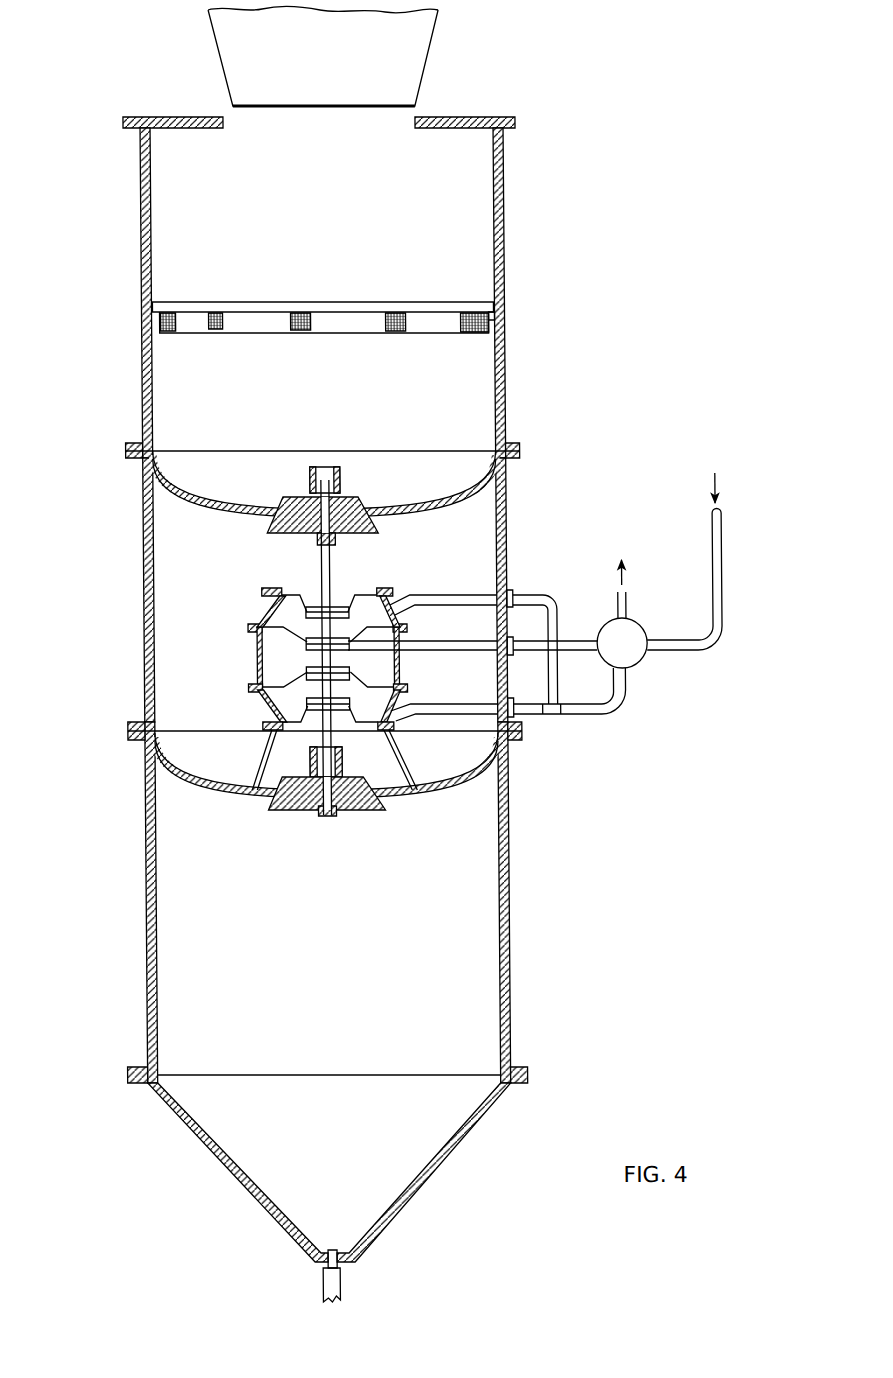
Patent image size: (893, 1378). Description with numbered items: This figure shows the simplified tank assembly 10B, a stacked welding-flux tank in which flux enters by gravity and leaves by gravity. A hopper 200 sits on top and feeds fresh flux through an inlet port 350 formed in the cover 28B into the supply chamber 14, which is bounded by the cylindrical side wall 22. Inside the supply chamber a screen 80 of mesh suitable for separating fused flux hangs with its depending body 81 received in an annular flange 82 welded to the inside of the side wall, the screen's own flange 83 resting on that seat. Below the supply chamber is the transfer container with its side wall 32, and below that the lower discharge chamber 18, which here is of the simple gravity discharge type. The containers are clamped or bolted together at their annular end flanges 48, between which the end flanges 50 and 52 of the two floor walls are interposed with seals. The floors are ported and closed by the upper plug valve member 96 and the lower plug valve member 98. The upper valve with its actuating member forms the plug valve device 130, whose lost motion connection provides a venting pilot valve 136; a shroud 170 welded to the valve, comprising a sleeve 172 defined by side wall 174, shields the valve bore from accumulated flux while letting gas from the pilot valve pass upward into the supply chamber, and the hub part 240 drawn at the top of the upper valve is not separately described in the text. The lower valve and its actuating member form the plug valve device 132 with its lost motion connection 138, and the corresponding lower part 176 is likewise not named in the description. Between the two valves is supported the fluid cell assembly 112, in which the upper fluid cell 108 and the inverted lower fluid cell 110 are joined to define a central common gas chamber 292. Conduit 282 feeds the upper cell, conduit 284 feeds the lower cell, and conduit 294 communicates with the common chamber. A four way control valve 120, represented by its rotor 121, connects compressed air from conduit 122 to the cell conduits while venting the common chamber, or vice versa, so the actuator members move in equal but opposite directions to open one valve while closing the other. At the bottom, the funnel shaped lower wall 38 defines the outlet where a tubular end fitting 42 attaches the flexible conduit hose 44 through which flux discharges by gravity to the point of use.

The tank assembly 10B is at (520, 320).
The hopper 200 is at (410, 33).
The inlet port 350 is at (414, 118).
The cover 28B is at (171, 117).
The supply chamber 14 is at (373, 293).
The side wall 22 is at (500, 381).
The side wall 32 is at (501, 522).
The discharge chamber 18 is at (448, 953).
The screen 80 is at (381, 318).
The flange 83 is at (328, 302).
The depending body 81 is at (297, 334).
The annular flange 82 is at (492, 322).
The end flanges 48 is at (513, 445).
The end flange 50 is at (513, 451).
The end flange 52 is at (517, 734).
The plug valve member 96 is at (369, 478).
The plug valve member 98 is at (364, 767).
The shroud 170 is at (302, 432).
The hub 240 is at (302, 452).
The sleeve 172 is at (318, 460).
The side wall 174 is at (345, 468).
The plug valve device 130 is at (379, 493).
The pilot valve 136 is at (306, 553).
The lower hub 176 is at (304, 757).
The plug valve device 132 is at (340, 826).
The lost motion connection 138 is at (303, 824).
The fluid cell assembly 112 is at (233, 665).
The common gas chamber 292 is at (265, 659).
The fluid cell 108 is at (260, 617).
The fluid cell 110 is at (261, 707).
The conduit 282 is at (418, 597).
The conduit 294 is at (448, 637).
The conduit 284 is at (440, 707).
The four way control valve 120 is at (643, 624).
The rotor 121 is at (621, 607).
The conduit 122 is at (720, 572).
The funnel shaped lower wall 38 is at (440, 1158).
The tubular end fitting 42 is at (323, 1252).
The flexible conduit hose 44 is at (330, 1282).